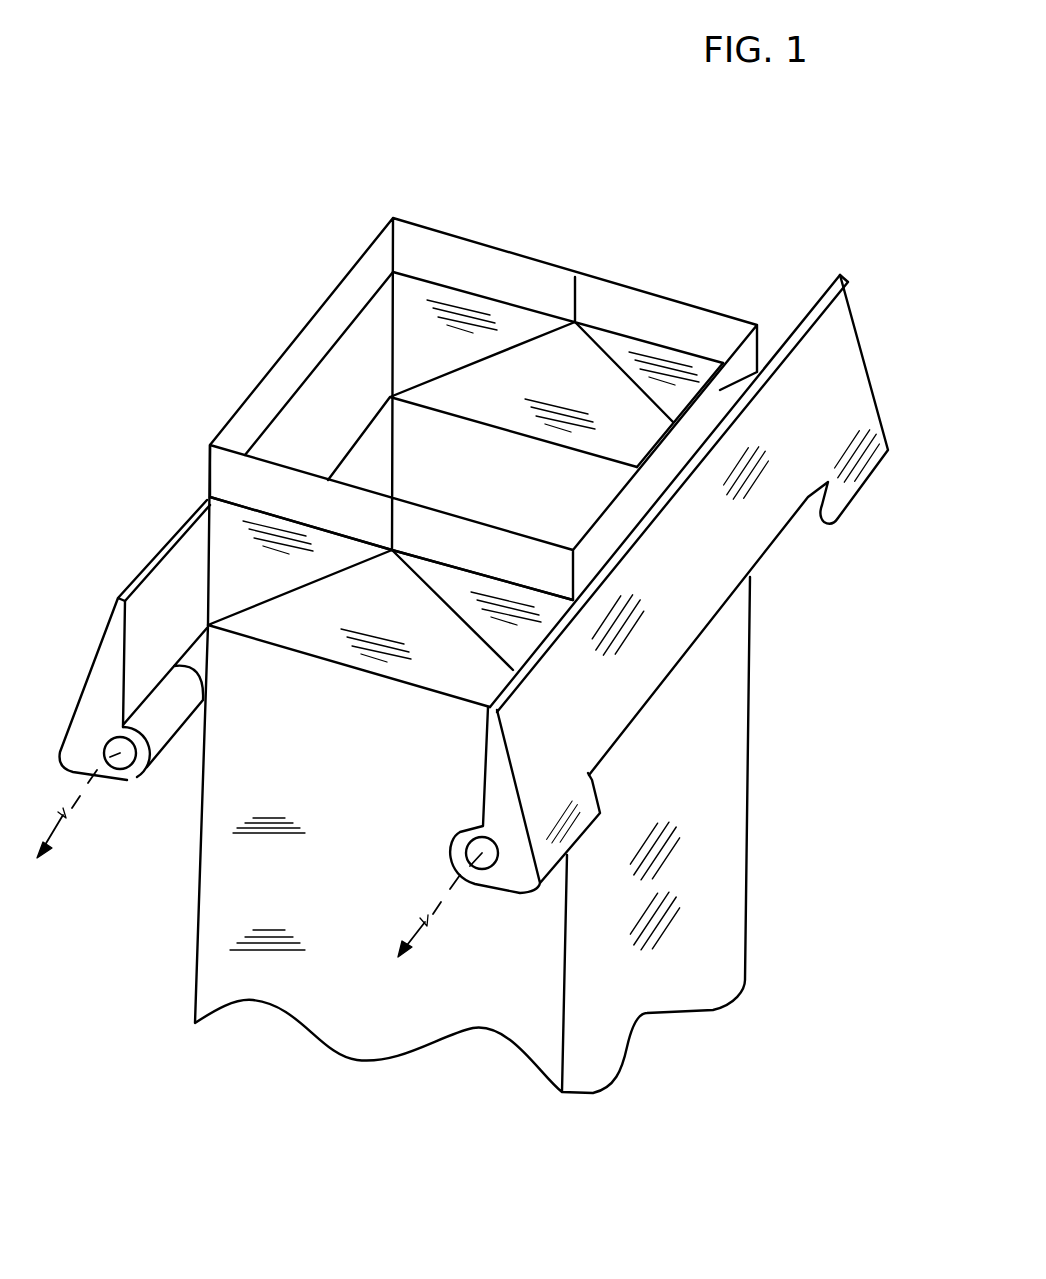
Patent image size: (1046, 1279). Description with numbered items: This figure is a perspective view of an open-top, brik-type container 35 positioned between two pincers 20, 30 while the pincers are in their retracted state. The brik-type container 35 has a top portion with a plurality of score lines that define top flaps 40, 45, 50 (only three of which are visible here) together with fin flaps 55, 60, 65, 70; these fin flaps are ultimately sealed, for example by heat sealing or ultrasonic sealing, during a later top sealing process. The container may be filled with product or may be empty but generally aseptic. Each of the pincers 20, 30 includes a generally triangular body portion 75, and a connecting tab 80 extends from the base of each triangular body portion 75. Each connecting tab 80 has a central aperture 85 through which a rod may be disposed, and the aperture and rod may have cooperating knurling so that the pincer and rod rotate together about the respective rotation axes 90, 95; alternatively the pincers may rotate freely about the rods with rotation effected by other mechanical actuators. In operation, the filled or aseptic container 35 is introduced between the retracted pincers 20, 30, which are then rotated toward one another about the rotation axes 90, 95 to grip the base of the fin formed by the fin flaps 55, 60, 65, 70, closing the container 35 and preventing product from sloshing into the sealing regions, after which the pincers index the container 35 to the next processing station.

The pincer 20 is at (726, 543).
The pincer 30 is at (86, 666).
The brik-type container 35 is at (356, 793).
The top flap 40 is at (393, 597).
The top flap 45 is at (349, 429).
The top flap 50 is at (581, 373).
The fin flap 55 is at (471, 561).
The fin flap 60 is at (307, 352).
The fin flap 65 is at (509, 288).
The fin flap 70 is at (758, 352).
The triangular body portion 75 is at (108, 645).
The connecting tab 80 is at (818, 515).
The central aperture 85 is at (85, 772).
The rotation axis 90 is at (65, 823).
The rotation axis 95 is at (427, 922).